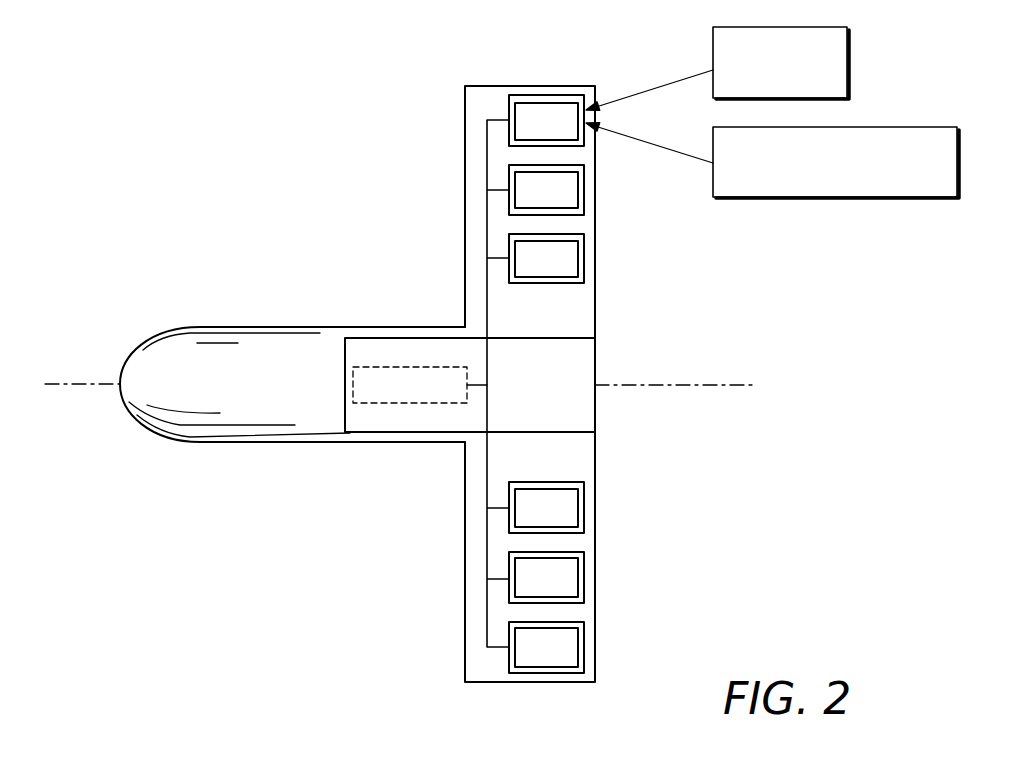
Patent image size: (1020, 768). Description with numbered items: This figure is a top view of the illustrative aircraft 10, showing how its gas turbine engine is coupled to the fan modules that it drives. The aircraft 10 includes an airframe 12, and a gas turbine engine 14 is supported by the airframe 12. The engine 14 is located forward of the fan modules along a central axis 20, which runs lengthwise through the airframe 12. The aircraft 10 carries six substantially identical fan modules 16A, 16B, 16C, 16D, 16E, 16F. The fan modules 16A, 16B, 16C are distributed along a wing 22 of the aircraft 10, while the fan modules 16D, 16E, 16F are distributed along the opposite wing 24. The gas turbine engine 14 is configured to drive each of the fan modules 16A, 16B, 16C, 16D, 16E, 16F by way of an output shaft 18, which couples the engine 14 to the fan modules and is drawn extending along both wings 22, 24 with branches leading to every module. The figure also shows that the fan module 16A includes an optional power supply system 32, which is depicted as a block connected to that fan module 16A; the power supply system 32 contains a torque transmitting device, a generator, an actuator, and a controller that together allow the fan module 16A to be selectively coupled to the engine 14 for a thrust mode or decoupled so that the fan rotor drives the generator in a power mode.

The aircraft 10 is at (270, 128).
The airframe 12 is at (282, 352).
The gas turbine engine 14 is at (350, 372).
The fan module 16A is at (858, 60).
The fan module 16B is at (598, 190).
The fan module 16C is at (598, 258).
The fan module 16D is at (598, 508).
The fan module 16E is at (598, 579).
The fan module 16F is at (598, 647).
The output shaft 18 is at (487, 323).
The central axis 20 is at (678, 385).
The wing 22 is at (455, 213).
The wing 24 is at (455, 557).
The optional power supply system 32 is at (845, 208).